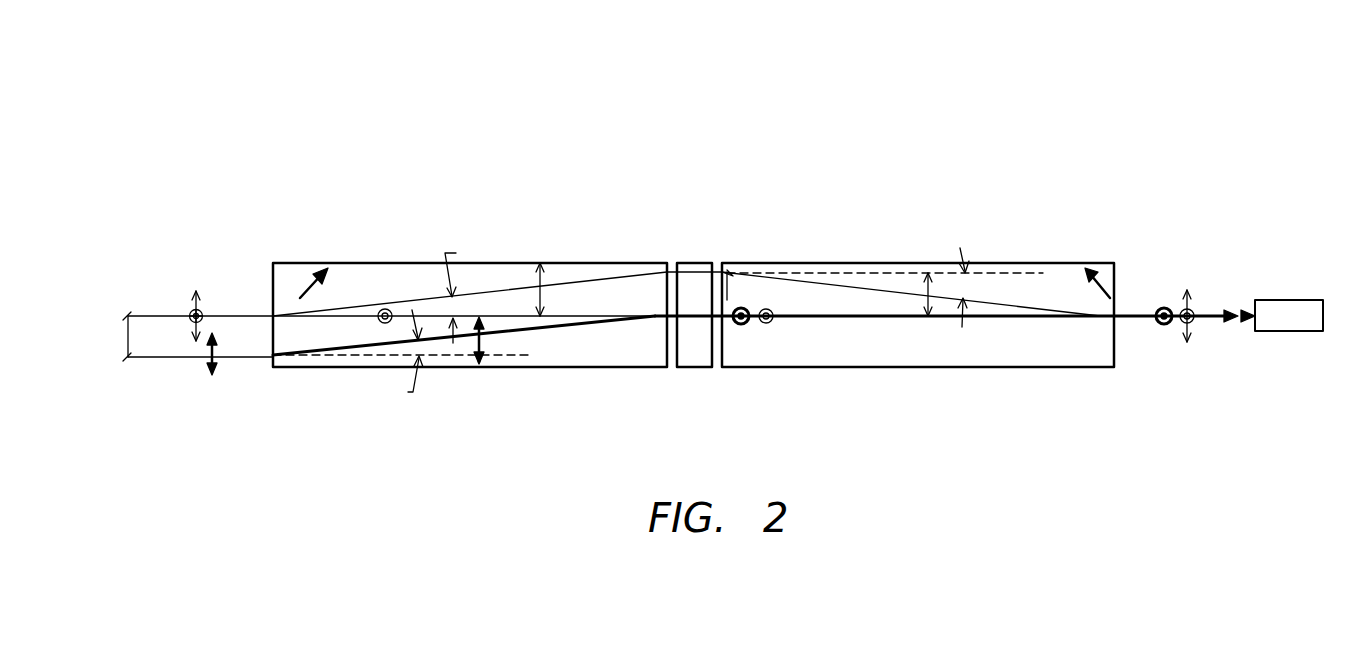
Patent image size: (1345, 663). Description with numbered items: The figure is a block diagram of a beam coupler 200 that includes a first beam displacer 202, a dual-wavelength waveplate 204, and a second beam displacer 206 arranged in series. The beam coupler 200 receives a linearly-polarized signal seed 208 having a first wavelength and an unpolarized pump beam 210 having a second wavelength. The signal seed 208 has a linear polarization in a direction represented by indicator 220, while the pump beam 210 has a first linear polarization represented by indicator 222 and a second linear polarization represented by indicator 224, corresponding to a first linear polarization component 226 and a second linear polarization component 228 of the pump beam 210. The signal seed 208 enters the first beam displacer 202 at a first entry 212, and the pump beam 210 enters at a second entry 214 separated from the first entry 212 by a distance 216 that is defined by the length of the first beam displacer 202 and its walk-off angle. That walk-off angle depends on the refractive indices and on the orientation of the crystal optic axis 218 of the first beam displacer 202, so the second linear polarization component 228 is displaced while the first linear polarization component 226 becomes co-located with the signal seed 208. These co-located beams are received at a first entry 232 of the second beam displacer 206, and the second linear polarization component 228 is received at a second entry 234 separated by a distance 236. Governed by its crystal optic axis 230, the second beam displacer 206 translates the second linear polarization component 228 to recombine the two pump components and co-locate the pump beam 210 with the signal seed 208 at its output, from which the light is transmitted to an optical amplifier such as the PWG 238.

The beam coupler 200 is at (742, 97).
The first beam displacer 202 is at (591, 260).
The dual-wavelength waveplate 204 is at (700, 368).
The second beam displacer 206 is at (1049, 261).
The signal seed 208 is at (245, 358).
The pump beam 210 is at (243, 314).
The first entry of the first beam displacer 212 is at (273, 358).
The second entry of the first beam displacer 214 is at (273, 314).
The distance 216 is at (127, 337).
The crystal optic axis 218 is at (330, 272).
The indicator 220 is at (211, 374).
The indicator 222 is at (193, 311).
The indicator 224 is at (194, 296).
The first linear polarization component 226 is at (522, 318).
The second linear polarization component 228 is at (520, 288).
The crystal optic axis 230 is at (1115, 266).
The first entry of the second beam displacer 232 is at (717, 318).
The second entry of the second beam displacer 234 is at (713, 262).
The distance 236 is at (727, 300).
The PWG 238 is at (1283, 300).